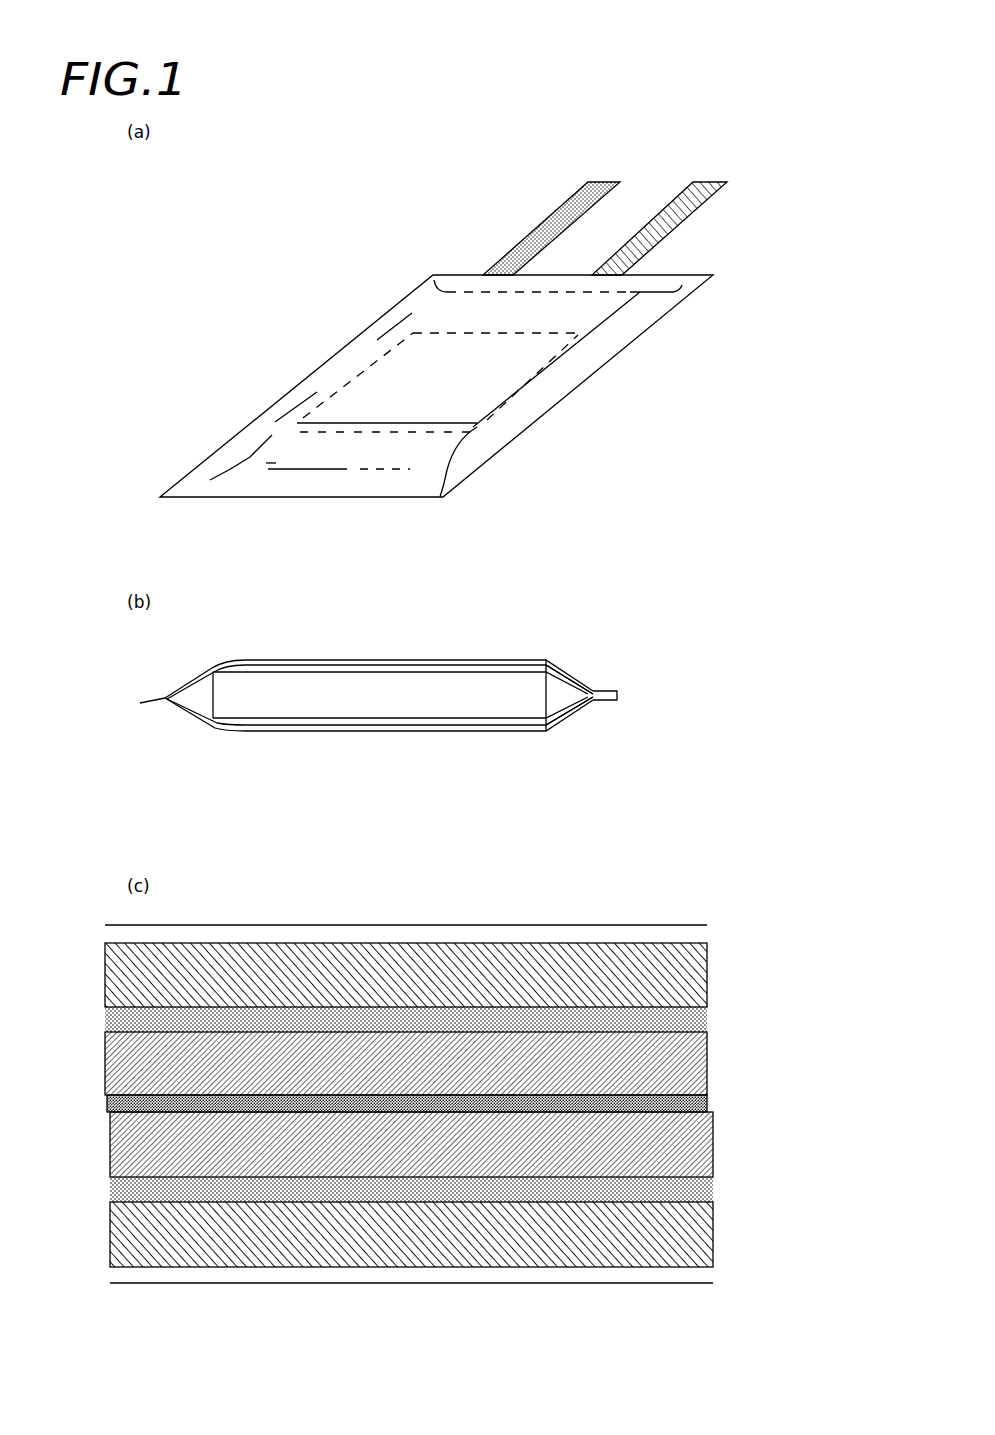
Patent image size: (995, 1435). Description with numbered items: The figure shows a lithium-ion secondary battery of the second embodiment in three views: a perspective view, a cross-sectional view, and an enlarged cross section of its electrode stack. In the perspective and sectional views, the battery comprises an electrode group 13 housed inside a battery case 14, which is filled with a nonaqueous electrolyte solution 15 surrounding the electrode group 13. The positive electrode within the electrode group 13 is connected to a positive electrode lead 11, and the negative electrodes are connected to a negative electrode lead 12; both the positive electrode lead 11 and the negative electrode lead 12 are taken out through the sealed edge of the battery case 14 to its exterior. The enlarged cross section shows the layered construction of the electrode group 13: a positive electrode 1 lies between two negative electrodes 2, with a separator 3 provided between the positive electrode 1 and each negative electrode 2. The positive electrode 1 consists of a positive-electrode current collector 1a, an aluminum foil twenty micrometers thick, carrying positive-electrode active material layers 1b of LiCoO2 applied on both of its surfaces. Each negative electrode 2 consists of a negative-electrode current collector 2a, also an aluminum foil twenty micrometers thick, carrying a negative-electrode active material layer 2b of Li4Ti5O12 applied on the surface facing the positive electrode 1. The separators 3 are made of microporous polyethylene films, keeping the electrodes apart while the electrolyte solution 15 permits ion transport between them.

The positive electrode 1 is at (85, 1032).
The positive-electrode current collector 1a is at (713, 1102).
The positive-electrode active material layers 1b is at (707, 1067).
The negative electrode 2 is at (85, 925).
The negative-electrode current collector 2a is at (707, 933).
The negative-electrode active material layer 2b is at (707, 977).
The separator 3 is at (707, 1022).
The positive electrode lead 11 is at (573, 210).
The negative electrode lead 12 is at (703, 182).
The electrode group 13 is at (555, 363).
The battery case 14 is at (676, 292).
The nonaqueous electrolyte solution 15 is at (557, 705).